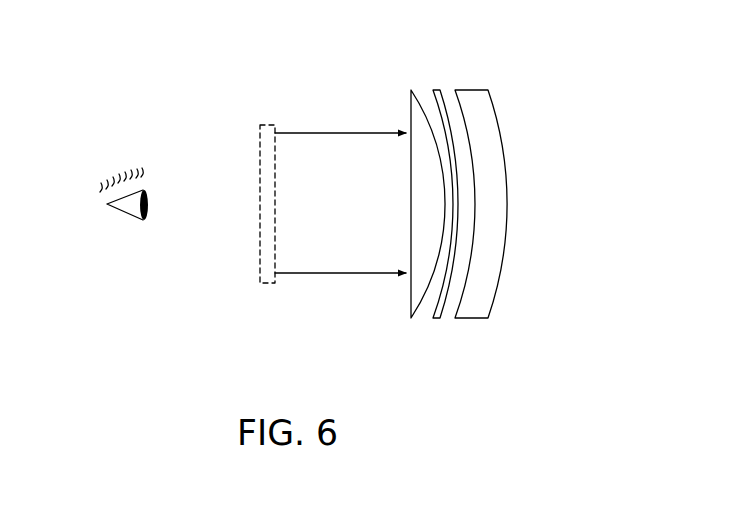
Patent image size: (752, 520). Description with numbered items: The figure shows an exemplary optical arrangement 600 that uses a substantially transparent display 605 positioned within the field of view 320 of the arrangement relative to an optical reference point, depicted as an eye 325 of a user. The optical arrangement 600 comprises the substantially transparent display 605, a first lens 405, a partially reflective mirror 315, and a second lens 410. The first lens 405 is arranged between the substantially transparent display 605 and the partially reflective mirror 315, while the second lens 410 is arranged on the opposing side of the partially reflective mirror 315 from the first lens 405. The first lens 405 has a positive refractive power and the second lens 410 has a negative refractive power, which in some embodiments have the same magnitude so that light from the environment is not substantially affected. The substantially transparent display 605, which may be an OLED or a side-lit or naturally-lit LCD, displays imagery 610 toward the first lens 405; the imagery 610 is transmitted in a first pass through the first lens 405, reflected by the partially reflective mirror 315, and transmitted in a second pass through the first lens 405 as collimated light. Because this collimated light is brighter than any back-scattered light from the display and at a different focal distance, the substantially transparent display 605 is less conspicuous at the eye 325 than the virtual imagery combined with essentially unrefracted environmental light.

The optical arrangement 600 is at (576, 69).
The field of view 320 is at (546, 209).
The eye 325 is at (126, 219).
The first lens 405 is at (411, 318).
The partially reflective mirror 315 is at (440, 318).
The second lens 410 is at (477, 318).
The substantially transparent display 605 is at (265, 283).
The imagery 610 is at (335, 132).